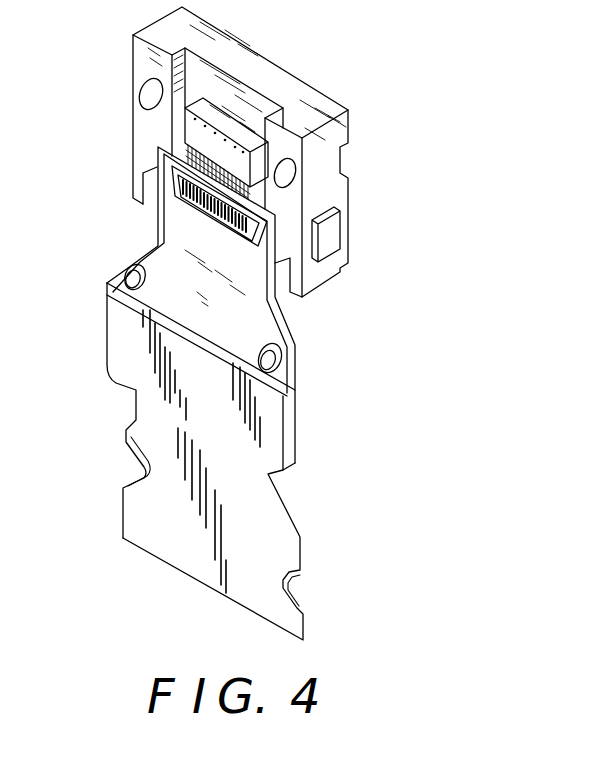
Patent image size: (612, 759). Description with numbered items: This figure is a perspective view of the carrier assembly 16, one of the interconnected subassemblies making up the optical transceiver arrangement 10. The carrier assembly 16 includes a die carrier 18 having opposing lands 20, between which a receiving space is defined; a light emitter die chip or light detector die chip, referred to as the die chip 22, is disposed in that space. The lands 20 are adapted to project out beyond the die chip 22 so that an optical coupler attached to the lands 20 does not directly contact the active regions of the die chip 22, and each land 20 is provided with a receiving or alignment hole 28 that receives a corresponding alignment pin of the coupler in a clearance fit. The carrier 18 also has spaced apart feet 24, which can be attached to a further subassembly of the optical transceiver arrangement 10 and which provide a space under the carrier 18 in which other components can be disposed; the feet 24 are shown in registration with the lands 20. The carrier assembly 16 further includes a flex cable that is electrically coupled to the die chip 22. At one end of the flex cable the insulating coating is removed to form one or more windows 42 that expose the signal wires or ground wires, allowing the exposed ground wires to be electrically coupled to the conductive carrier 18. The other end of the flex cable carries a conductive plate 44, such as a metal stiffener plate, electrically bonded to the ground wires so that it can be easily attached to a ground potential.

The optical transceiver arrangement 10 is at (293, 352).
The carrier assembly 16 is at (234, 149).
The die carrier 18 is at (332, 193).
The lands 20 is at (132, 57).
The die chip 22 is at (222, 118).
The feet 24 is at (166, 305).
The alignment hole 28 is at (147, 94).
The windows 42 is at (203, 207).
The conductive plate 44 is at (118, 322).